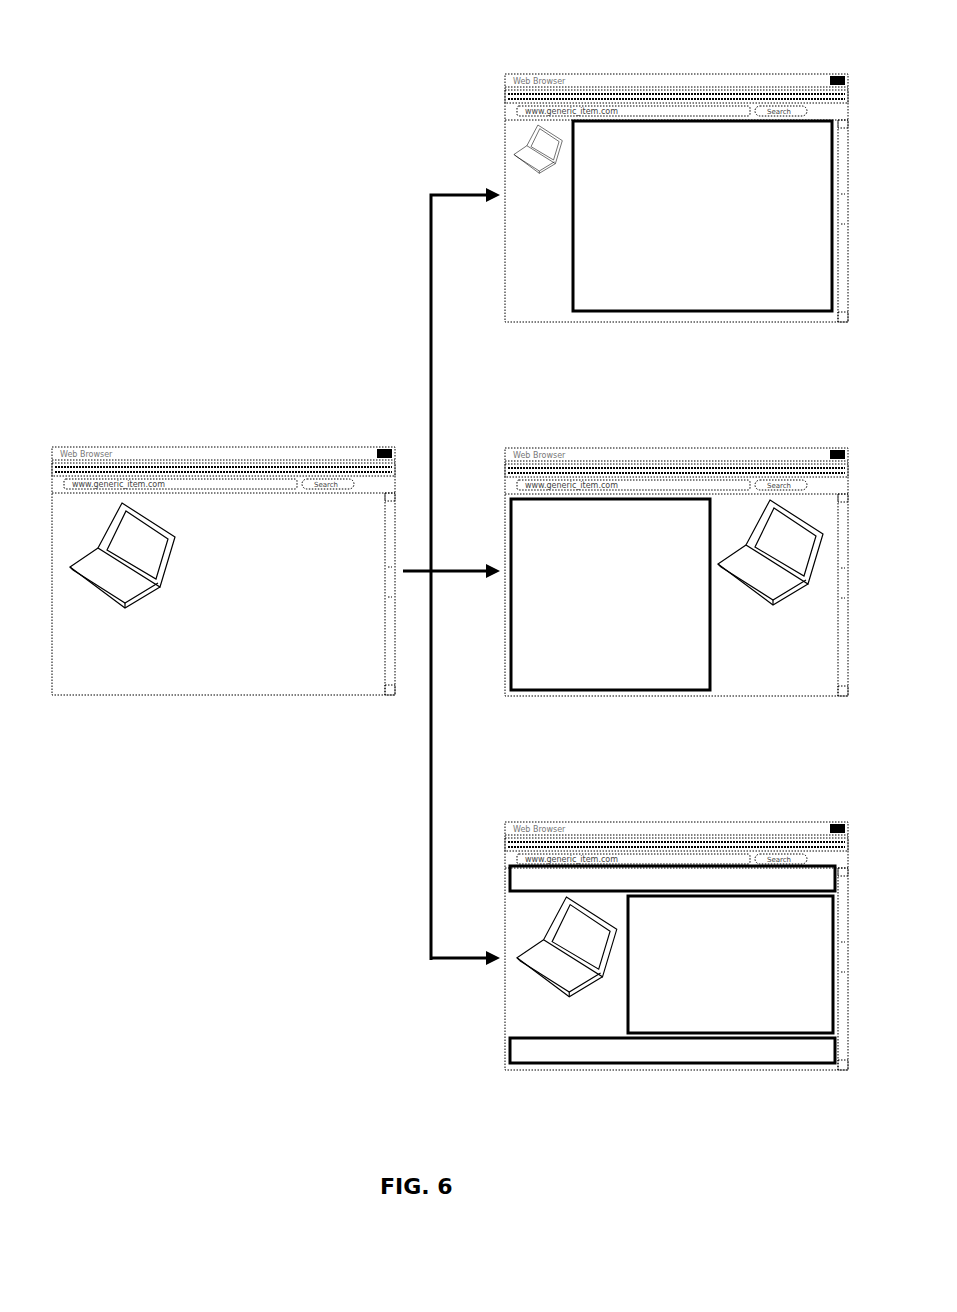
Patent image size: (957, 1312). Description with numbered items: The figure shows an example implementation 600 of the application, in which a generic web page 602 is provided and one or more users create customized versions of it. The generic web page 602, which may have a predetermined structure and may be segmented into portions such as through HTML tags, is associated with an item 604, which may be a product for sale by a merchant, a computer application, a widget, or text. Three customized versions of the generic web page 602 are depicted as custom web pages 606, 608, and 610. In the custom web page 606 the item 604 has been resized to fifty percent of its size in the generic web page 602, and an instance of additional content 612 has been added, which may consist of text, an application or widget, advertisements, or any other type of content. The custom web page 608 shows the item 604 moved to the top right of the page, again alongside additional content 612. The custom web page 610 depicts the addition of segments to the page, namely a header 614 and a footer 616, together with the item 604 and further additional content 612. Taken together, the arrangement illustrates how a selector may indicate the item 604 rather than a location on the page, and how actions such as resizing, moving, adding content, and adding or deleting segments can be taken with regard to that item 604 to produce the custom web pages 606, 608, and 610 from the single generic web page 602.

The implementation 600 is at (186, 952).
The generic web page 602 is at (246, 452).
The item 604 is at (125, 606).
The custom web page 606 is at (673, 72).
The custom web page 608 is at (673, 448).
The custom web page 610 is at (672, 822).
The additional content 612 is at (781, 143).
The header 614 is at (540, 878).
The footer 616 is at (555, 1048).